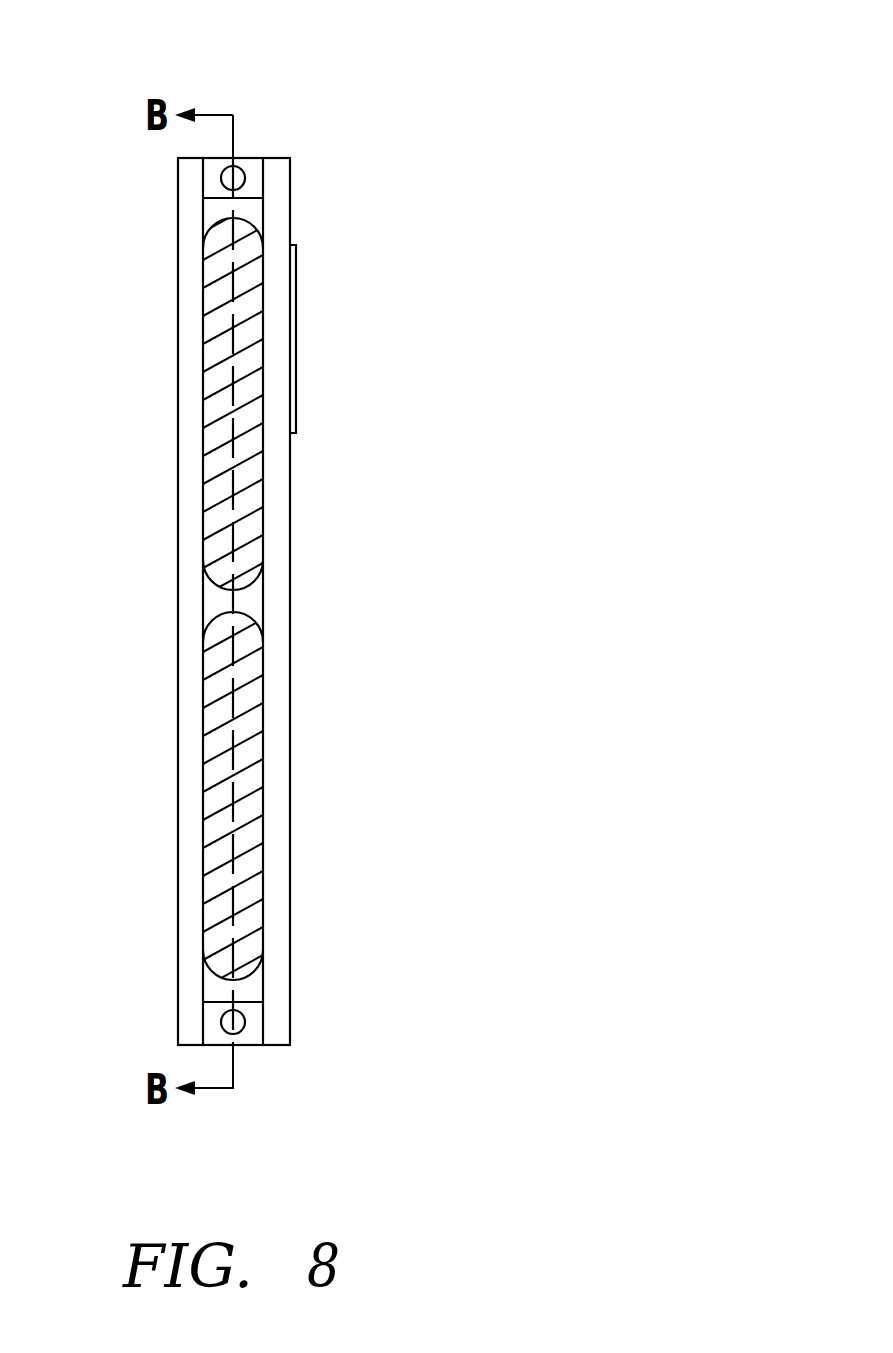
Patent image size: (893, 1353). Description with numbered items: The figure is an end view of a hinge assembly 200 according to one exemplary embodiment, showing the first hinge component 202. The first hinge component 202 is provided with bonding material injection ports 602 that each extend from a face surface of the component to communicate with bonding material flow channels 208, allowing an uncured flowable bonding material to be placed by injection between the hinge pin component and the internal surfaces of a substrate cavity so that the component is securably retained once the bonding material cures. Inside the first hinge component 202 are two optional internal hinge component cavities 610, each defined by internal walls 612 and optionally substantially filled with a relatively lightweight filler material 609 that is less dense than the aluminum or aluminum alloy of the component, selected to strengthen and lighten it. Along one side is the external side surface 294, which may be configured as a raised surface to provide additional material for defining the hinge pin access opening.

The hinge assembly 200 is at (655, 86).
The first hinge component 202 is at (178, 190).
The bonding material flow channels 208 is at (248, 163).
The external side surface 294 is at (296, 325).
The bonding material injection ports 602 is at (222, 182).
The filler material 609 is at (245, 517).
The internal hinge component cavities 610 is at (215, 398).
The internal walls 612 is at (253, 215).